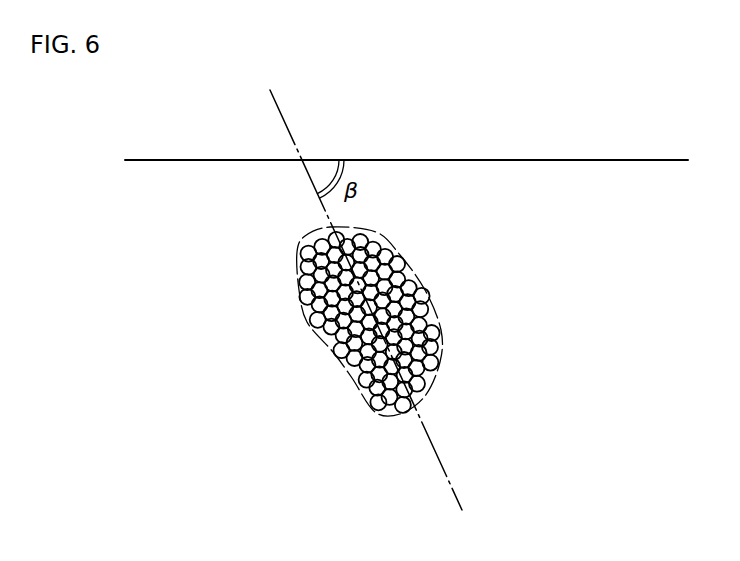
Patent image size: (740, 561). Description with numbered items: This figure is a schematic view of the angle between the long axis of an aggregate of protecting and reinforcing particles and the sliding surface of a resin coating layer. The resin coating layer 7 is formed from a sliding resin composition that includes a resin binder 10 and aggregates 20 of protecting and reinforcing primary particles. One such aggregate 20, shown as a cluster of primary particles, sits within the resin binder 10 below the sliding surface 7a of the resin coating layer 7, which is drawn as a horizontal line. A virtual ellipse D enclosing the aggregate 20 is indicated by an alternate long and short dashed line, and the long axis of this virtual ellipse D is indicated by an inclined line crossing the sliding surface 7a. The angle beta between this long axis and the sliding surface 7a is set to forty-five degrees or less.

The resin coating layer 7 is at (606, 150).
The sliding surface 7a is at (477, 160).
The resin binder 10 is at (535, 214).
The aggregate 20 is at (297, 316).
The virtual ellipse D is at (425, 300).